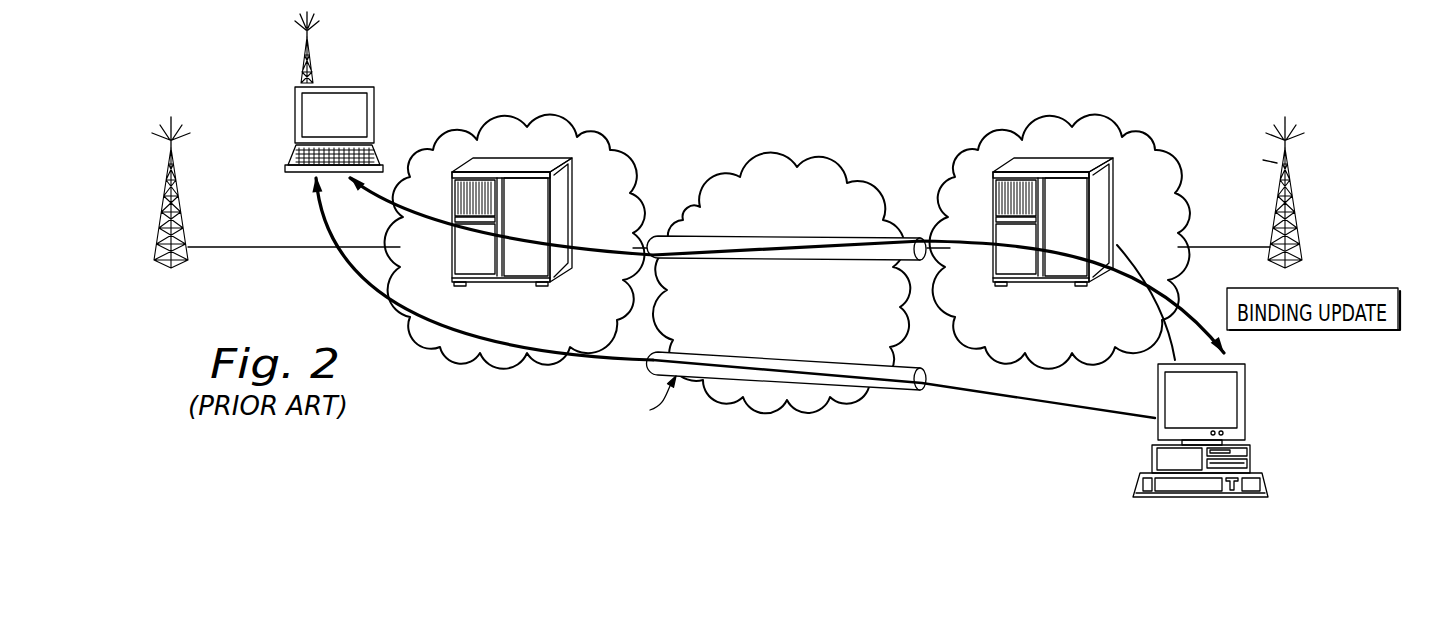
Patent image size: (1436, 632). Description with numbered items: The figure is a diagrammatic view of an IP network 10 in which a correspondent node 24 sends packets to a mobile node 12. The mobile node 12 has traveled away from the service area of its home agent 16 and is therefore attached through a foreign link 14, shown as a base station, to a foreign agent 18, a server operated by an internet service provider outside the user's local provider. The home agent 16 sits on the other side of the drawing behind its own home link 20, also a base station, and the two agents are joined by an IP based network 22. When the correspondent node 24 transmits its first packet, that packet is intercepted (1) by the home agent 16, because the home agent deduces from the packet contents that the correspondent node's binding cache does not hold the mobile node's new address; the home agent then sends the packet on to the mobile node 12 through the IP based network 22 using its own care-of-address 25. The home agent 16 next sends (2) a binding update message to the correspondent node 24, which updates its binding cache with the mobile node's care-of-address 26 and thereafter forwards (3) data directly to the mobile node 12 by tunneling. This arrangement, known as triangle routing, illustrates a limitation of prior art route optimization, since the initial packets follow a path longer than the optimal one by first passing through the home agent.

The IP network 10 is at (1195, 101).
The mobile node 12 is at (357, 86).
The foreign link 14 is at (161, 212).
The home agent 16 is at (1100, 222).
The foreign agent 18 is at (560, 222).
The home link 20 is at (1298, 213).
The IP based network 22 is at (801, 334).
The correspondent node 24 is at (1245, 400).
The care-of-address 25 is at (905, 237).
The care-of-address 26 is at (882, 391).
The interception of first packet 1 is at (1152, 302).
The binding update message 2 is at (787, 264).
The direct data forwarding 3 is at (733, 299).